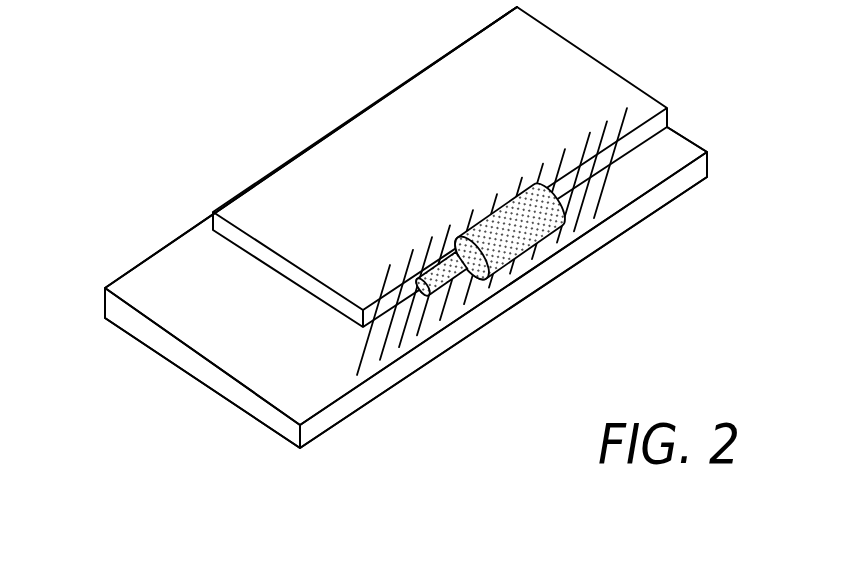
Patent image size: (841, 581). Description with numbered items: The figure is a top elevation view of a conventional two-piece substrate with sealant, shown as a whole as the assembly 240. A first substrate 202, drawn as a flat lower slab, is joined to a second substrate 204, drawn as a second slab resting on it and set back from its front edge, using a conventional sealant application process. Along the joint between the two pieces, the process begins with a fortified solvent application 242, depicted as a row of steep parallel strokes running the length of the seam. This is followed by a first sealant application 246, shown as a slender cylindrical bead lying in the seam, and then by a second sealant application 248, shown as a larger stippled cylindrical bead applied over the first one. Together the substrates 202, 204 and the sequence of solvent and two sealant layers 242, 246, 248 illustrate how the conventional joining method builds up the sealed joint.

The first substrate 202 is at (182, 272).
The second substrate 204 is at (602, 62).
The optical assembly 240 is at (160, 113).
The fortified solvent application 242 is at (397, 347).
The first sealant application 246 is at (436, 305).
The second sealant application 248 is at (578, 243).